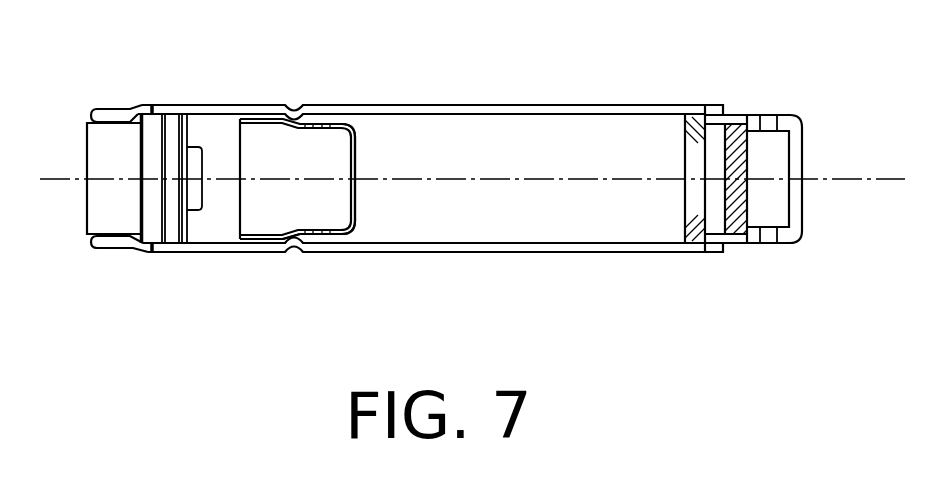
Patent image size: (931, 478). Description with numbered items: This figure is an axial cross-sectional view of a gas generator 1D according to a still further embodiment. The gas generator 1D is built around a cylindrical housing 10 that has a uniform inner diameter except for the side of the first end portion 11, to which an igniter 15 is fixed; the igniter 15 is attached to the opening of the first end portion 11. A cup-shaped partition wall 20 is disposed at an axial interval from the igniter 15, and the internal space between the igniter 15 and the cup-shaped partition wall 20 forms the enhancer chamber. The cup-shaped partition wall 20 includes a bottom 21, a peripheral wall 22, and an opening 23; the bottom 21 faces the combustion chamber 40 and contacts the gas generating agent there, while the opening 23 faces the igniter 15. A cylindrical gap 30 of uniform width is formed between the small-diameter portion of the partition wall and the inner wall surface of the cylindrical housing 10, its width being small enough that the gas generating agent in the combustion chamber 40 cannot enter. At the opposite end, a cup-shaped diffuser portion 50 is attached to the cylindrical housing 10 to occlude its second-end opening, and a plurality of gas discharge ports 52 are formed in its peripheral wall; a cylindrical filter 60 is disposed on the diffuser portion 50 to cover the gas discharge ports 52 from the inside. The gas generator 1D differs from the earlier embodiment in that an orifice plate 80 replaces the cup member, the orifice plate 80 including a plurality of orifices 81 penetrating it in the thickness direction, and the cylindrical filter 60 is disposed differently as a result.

The gas generator 1D is at (455, 85).
The cylindrical housing 10 is at (575, 105).
The first end portion 11 is at (91, 115).
The igniter 15 is at (100, 205).
The cup-shaped partition wall 20 is at (340, 136).
The bottom 21 is at (355, 217).
The peripheral wall 22 is at (340, 122).
The opening 23 is at (240, 223).
The cylindrical gap 30 is at (311, 122).
The combustion chamber 40 is at (518, 165).
The diffuser portion 50 is at (787, 188).
The gas discharge ports 52 is at (770, 238).
The cylindrical filter 60 is at (740, 151).
The orifice plate 80 is at (664, 182).
The orifices 81 is at (699, 117).